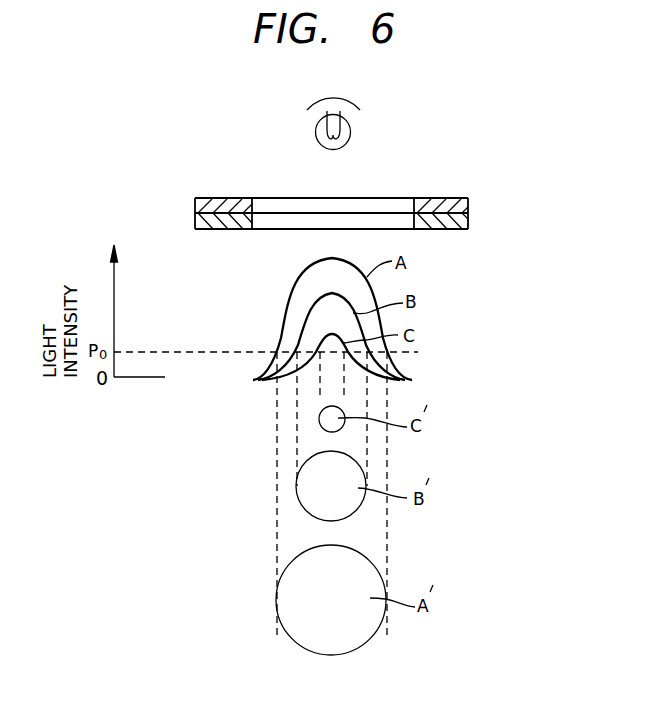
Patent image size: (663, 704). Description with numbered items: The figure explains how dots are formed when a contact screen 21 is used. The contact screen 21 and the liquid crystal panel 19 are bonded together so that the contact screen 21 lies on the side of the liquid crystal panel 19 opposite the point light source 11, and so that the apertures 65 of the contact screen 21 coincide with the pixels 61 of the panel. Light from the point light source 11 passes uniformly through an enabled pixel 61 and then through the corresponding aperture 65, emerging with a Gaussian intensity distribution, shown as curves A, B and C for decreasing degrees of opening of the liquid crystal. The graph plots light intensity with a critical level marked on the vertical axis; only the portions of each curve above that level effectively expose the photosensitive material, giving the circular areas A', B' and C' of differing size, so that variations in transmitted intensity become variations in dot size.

The point light source 11 is at (357, 128).
The liquid crystal panel 19 is at (467, 203).
The contact screen 21 is at (468, 222).
The pixel 61 is at (411, 208).
The aperture 65 is at (413, 225).